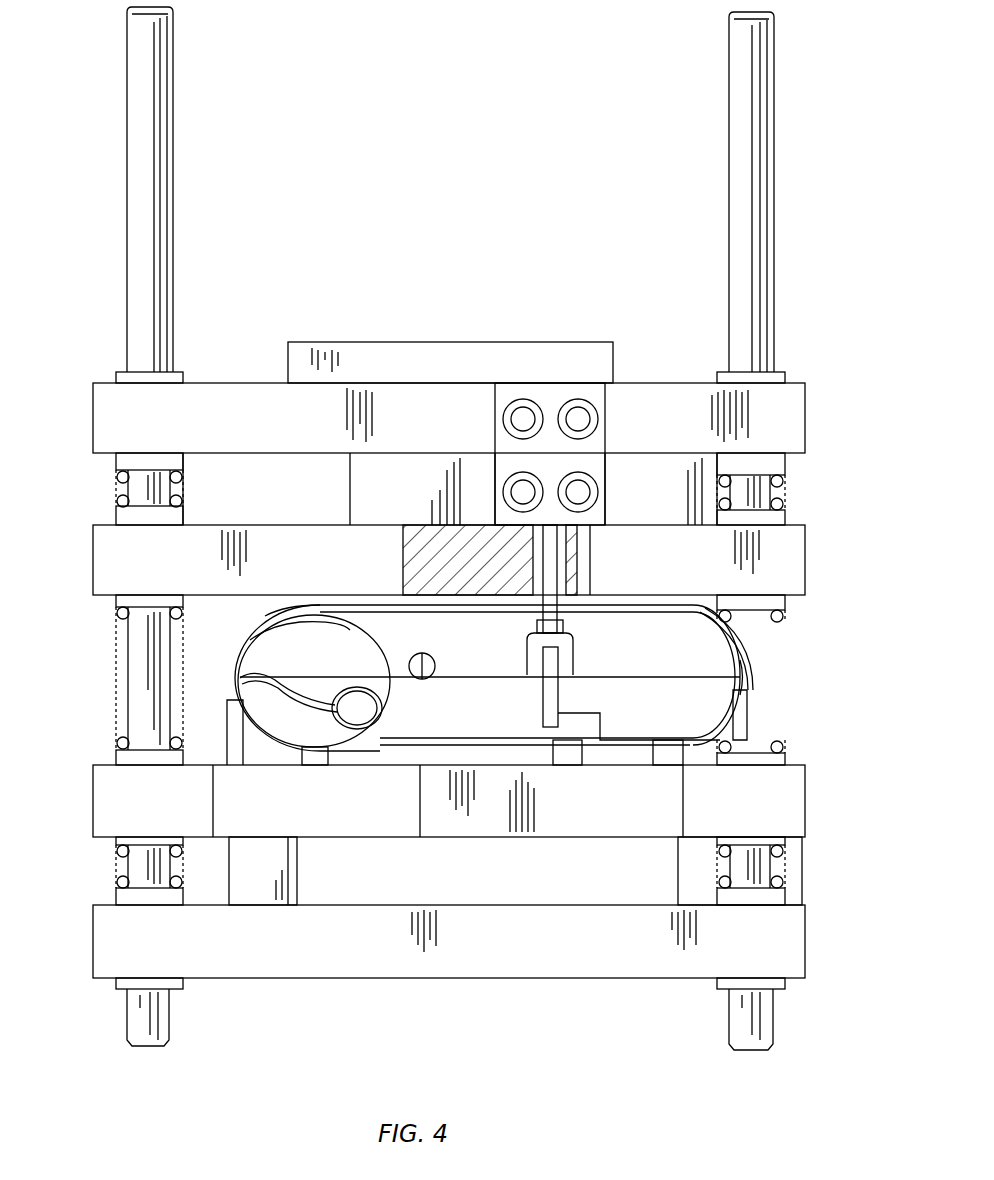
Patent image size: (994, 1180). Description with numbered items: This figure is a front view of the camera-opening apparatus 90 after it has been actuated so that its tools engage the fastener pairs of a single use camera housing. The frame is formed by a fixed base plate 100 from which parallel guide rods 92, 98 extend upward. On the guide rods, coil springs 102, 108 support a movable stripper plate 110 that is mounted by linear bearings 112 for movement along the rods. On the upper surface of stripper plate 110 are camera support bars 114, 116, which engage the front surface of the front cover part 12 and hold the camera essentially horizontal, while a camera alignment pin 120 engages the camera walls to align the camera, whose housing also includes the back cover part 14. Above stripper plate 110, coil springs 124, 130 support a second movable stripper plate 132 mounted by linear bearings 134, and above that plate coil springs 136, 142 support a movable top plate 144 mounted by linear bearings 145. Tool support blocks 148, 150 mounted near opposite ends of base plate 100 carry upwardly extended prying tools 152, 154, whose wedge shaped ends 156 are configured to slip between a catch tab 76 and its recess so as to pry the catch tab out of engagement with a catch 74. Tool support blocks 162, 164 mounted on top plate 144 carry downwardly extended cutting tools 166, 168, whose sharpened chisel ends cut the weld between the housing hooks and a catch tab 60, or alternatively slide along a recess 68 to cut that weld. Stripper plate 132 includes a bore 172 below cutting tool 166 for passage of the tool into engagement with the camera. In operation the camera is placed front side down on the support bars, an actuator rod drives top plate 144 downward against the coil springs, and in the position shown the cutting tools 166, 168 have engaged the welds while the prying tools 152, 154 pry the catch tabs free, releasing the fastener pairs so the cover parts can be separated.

The front cover part 12 is at (666, 714).
The back cover part 14 is at (666, 666).
The catch tab 60 is at (532, 655).
The recess 68 is at (545, 698).
The catch 74 is at (236, 682).
The catch tab 76 is at (742, 672).
The apparatus 90 is at (158, 1065).
The guide rod 92 is at (150, 30).
The guide rod 98 is at (752, 52).
The base plate 100 is at (588, 958).
The coil spring 102 is at (116, 866).
The coil spring 108 is at (790, 868).
The stripper plate 110 is at (110, 800).
The linear bearing 112 is at (116, 748).
The camera support bar 114 is at (318, 756).
The camera support bar 116 is at (568, 757).
The camera alignment pin 120 is at (668, 757).
The coil spring 124 is at (116, 656).
The coil spring 130 is at (778, 622).
The stripper plate 132 is at (115, 560).
The linear bearing 134 is at (124, 514).
The coil spring 136 is at (118, 480).
The coil spring 142 is at (787, 486).
The top plate 144 is at (105, 410).
The linear bearing 145 is at (124, 377).
The tool support block 148 is at (262, 880).
The tool support block 150 is at (678, 870).
The prying tool 152 is at (232, 736).
The prying tool 154 is at (742, 722).
The wedge shaped end 156 is at (742, 700).
The tool support block 162 is at (590, 515).
The tool support block 164 is at (348, 486).
The cutting tool 166 is at (553, 550).
The cutting tool 168 is at (392, 600).
The bore 172 is at (562, 585).